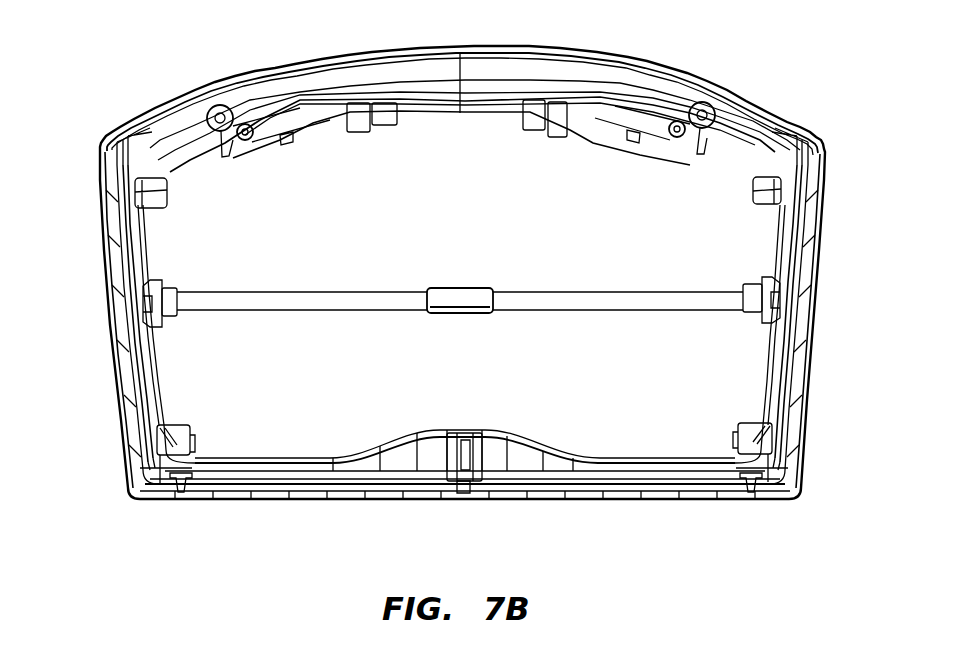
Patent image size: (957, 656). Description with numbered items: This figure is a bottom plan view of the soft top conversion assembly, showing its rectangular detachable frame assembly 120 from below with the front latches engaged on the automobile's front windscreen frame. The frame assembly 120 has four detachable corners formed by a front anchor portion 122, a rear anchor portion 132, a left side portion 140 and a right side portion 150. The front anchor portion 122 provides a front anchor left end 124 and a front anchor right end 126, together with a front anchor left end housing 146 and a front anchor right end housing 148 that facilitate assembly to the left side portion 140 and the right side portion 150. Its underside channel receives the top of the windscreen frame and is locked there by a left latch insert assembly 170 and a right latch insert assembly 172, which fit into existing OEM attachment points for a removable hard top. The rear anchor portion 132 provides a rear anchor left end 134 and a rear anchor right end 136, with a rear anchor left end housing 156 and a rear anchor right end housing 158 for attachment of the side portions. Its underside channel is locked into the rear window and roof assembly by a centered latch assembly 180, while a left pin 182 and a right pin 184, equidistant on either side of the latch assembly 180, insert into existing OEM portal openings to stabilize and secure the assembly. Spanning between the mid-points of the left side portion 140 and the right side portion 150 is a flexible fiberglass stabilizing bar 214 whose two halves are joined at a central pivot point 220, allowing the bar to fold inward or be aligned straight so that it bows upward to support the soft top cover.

The rectangular detachable frame assembly 120 is at (207, 49).
The front anchor portion 122 is at (668, 78).
The front anchor left end 124 is at (785, 120).
The front anchor right end 126 is at (132, 130).
The rear anchor portion 132 is at (620, 498).
The rear anchor left end 134 is at (780, 500).
The rear anchor right end 136 is at (140, 497).
The left side portion 140 is at (815, 292).
The front anchor left end housing 146 is at (775, 195).
The front anchor right end housing 148 is at (146, 194).
The right side portion 150 is at (122, 373).
The rear anchor left end housing 156 is at (752, 440).
The rear anchor right end housing 158 is at (178, 444).
The left latch insert assembly 170 is at (586, 120).
The right latch insert assembly 172 is at (300, 130).
The latch assembly 180 is at (458, 456).
The left pin 182 is at (182, 496).
The right pin 184 is at (746, 497).
The flexible stabilizing bar 214 is at (277, 312).
The central pivot point 220 is at (458, 297).